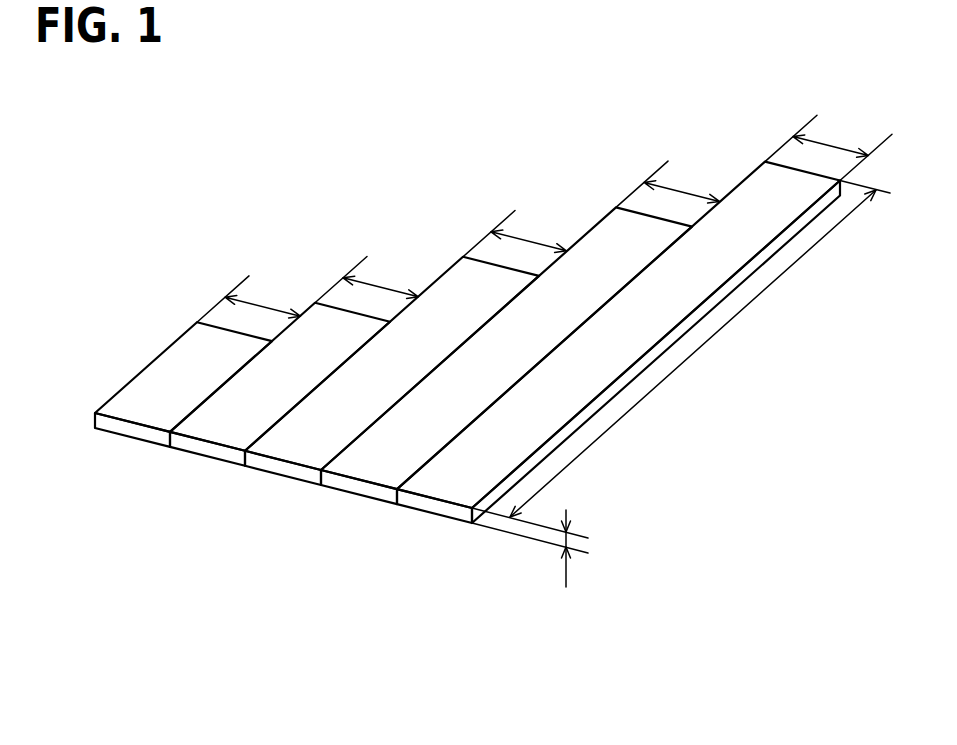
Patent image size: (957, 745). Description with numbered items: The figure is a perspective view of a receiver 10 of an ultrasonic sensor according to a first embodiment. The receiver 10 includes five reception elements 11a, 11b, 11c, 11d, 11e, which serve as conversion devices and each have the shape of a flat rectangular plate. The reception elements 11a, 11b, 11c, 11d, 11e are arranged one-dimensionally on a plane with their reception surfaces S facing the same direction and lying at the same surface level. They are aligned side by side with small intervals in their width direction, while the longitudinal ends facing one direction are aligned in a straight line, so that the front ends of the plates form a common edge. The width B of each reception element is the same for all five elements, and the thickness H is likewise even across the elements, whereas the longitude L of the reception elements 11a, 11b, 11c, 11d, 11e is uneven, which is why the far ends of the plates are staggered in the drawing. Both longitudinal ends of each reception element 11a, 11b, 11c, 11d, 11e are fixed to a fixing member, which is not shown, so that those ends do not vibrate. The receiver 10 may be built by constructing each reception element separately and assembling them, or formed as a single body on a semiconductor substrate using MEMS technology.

The receiver 10 is at (588, 100).
The reception element 11a is at (297, 447).
The reception element 11b is at (220, 427).
The reception element 11c is at (143, 412).
The reception element 11d is at (382, 469).
The reception element 11e is at (458, 486).
The reception surface S is at (175, 376).
The width B is at (546, 215).
The longitude L is at (700, 349).
The thickness H is at (530, 564).